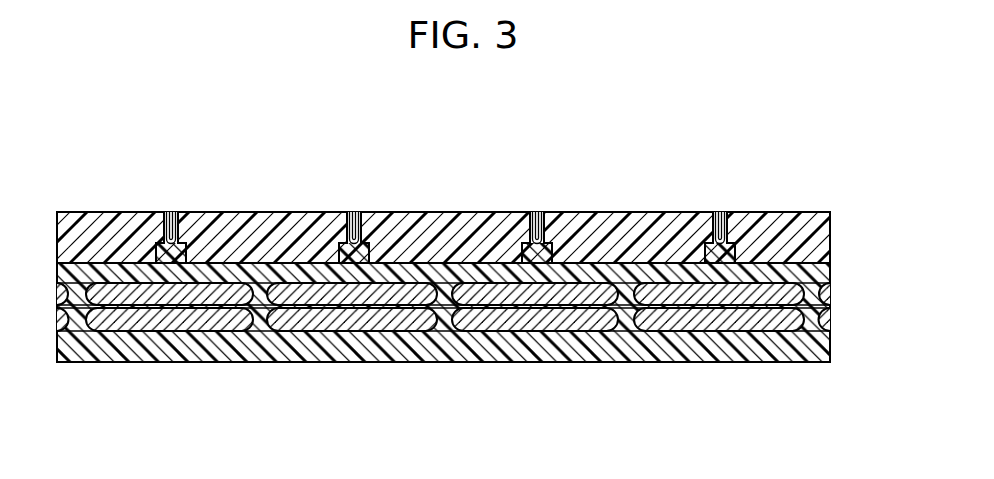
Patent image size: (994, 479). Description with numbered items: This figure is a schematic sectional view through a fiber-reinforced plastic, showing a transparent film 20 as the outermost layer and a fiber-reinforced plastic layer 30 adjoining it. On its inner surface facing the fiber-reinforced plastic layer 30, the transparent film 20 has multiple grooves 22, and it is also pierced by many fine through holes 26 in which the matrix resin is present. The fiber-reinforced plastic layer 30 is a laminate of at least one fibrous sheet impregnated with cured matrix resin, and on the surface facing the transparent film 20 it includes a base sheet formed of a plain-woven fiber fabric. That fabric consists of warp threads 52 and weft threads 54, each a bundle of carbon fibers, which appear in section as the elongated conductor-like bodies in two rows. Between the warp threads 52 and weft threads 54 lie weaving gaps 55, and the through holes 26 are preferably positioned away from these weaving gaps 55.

The transparent film 20 is at (803, 212).
The grooves 22 is at (193, 212).
The through holes 26 is at (169, 212).
The fiber-reinforced plastic layer 30 is at (836, 263).
The warp threads 52 is at (134, 331).
The weft threads 54 is at (197, 300).
The weaving gaps 55 is at (261, 298).